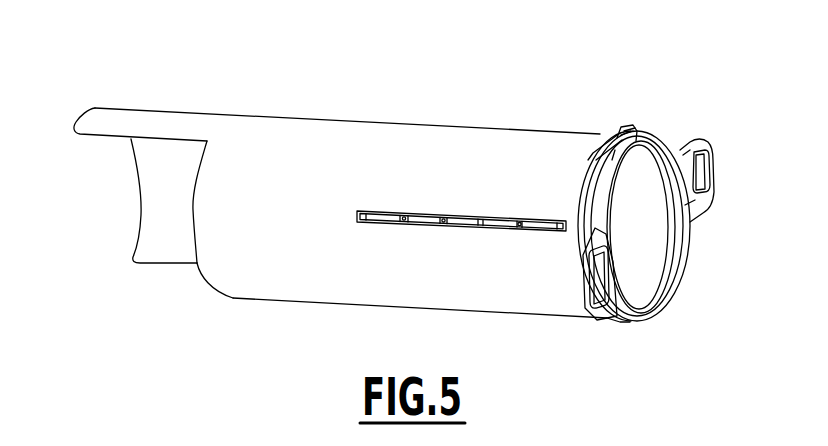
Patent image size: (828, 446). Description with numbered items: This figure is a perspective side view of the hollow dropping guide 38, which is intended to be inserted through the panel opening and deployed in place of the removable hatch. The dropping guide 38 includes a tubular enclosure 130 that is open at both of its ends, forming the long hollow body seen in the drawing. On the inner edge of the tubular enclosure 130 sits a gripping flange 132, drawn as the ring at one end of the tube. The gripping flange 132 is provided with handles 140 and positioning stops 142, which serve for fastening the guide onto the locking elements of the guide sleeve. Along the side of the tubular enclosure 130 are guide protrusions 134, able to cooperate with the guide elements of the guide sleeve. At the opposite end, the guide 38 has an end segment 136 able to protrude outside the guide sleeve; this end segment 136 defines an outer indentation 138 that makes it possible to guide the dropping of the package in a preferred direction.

The tubular enclosure 130 is at (545, 146).
The gripping flange 132 is at (690, 257).
The guide protrusions 134 is at (457, 221).
The end segment 136 is at (226, 102).
The outer indentation 138 is at (101, 142).
The handles 140 is at (712, 170).
The positioning stops 142 is at (620, 128).
The dropping guide 38 is at (612, 335).